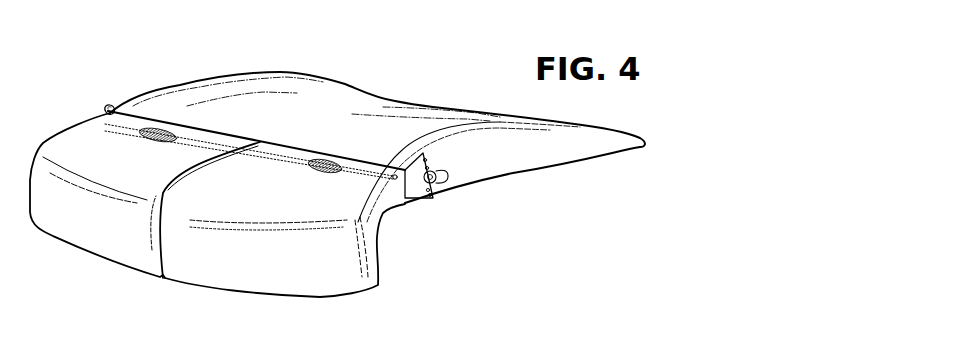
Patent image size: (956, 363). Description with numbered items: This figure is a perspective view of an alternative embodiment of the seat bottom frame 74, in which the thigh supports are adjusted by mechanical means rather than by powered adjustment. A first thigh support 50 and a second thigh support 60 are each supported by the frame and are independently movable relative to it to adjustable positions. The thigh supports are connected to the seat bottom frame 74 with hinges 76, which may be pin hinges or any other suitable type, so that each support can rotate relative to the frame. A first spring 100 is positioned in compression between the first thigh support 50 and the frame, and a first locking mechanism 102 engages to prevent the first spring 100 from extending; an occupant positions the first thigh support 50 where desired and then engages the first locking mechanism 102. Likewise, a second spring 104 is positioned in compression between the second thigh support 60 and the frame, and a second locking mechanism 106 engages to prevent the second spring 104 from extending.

The first thigh support 50 is at (90, 258).
The second thigh support 60 is at (237, 292).
The seat bottom frame 74 is at (570, 163).
The hinge 76 is at (213, 132).
The first spring 100 is at (167, 123).
The first locking mechanism 102 is at (113, 108).
The second spring 104 is at (340, 155).
The second locking mechanism 106 is at (447, 166).